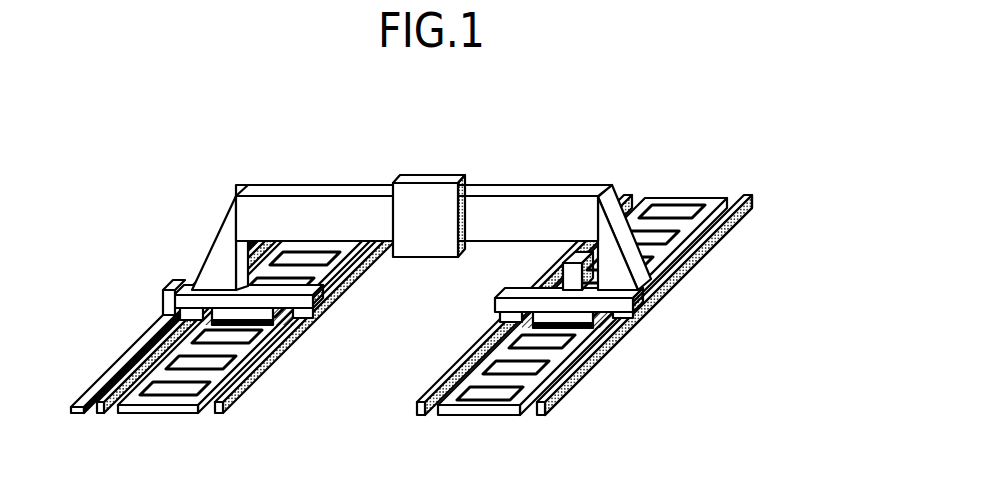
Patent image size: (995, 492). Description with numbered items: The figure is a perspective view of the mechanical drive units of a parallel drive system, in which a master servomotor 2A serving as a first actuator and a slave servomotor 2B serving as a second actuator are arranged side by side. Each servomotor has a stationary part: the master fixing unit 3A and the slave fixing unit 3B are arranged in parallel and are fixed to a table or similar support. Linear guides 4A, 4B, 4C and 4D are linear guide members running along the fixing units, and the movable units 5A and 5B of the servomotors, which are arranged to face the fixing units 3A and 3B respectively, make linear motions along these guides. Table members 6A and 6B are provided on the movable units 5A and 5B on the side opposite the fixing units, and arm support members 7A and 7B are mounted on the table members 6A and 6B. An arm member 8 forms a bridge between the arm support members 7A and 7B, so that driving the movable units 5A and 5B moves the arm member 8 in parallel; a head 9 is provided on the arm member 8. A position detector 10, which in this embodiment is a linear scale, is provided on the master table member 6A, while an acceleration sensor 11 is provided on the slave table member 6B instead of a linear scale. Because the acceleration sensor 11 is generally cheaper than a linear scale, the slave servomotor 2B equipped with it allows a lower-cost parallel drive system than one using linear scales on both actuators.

The master servomotor 2A is at (253, 378).
The slave servomotor 2B is at (573, 388).
The master fixing unit 3A is at (160, 414).
The slave fixing unit 3B is at (481, 415).
The linear guide 4A is at (100, 414).
The linear guide 4B is at (220, 414).
The linear guide 4C is at (418, 415).
The linear guide 4D is at (538, 415).
The movable unit 5A is at (258, 316).
The movable unit 5B is at (577, 318).
The master table member 6A is at (318, 277).
The slave table member 6B is at (518, 292).
The arm support member 7A is at (223, 242).
The arm support member 7B is at (612, 200).
The arm member 8 is at (580, 190).
The head 9 is at (443, 181).
The position detector 10 is at (168, 283).
The acceleration sensor 11 is at (570, 278).